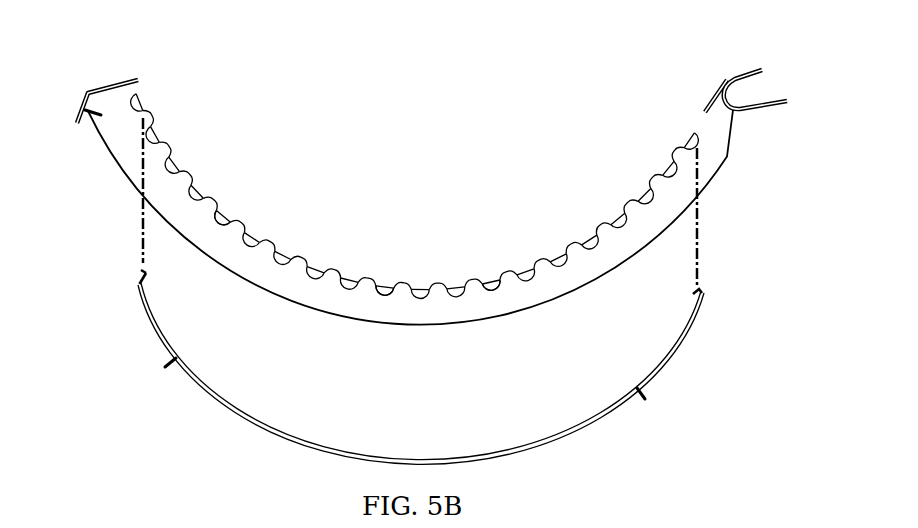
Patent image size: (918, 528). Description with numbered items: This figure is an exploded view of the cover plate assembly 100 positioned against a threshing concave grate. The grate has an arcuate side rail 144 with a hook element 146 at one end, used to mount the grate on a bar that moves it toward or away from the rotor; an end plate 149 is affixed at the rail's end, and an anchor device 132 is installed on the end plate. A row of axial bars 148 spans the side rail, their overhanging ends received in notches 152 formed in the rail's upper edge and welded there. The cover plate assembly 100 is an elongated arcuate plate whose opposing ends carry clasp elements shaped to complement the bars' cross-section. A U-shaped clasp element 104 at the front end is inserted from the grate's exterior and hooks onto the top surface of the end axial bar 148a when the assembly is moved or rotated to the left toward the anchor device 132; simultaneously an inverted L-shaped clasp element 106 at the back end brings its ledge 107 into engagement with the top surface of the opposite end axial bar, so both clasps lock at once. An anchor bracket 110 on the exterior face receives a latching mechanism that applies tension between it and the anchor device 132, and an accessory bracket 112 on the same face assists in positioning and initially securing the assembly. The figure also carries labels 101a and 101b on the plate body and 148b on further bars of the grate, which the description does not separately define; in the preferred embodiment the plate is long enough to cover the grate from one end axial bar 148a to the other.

The cover plate assembly 100 is at (421, 387).
The inner surface of rim 101a is at (493, 455).
The outer surface of rim 101b is at (536, 443).
The U-shaped clasp element 104 is at (705, 300).
The inverted L-shaped clasp element 106 is at (139, 284).
The ledge 107 is at (141, 273).
The anchor bracket 110 is at (168, 367).
The accessory bracket 112 is at (640, 403).
The anchor device 132 is at (90, 118).
The side rail 144 is at (257, 272).
The hook element 146 is at (762, 106).
The axial bar 148 is at (350, 280).
The axial bar 148a is at (146, 101).
The projection 148b is at (281, 262).
The end plate 149 is at (95, 87).
The notch 152 is at (218, 226).